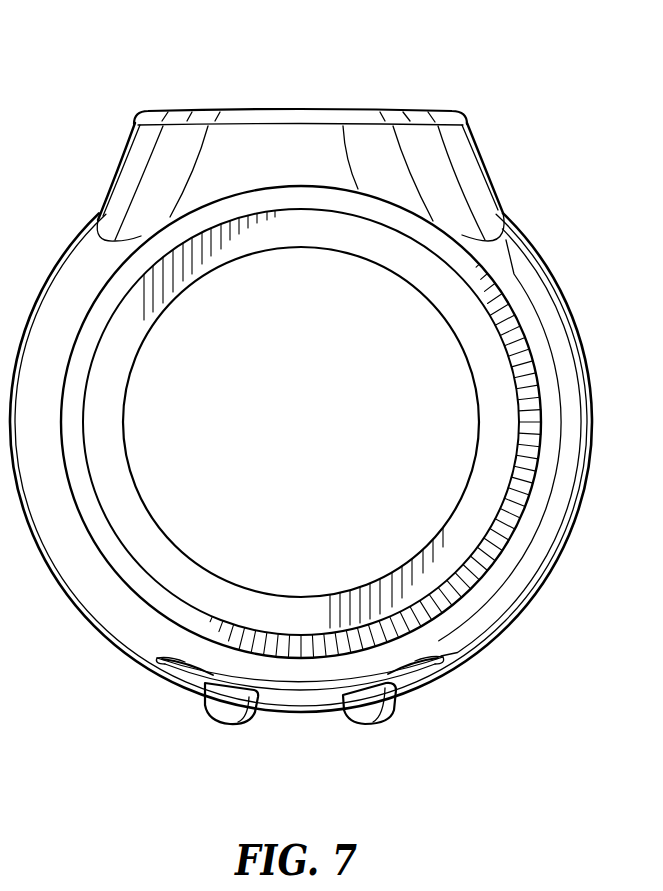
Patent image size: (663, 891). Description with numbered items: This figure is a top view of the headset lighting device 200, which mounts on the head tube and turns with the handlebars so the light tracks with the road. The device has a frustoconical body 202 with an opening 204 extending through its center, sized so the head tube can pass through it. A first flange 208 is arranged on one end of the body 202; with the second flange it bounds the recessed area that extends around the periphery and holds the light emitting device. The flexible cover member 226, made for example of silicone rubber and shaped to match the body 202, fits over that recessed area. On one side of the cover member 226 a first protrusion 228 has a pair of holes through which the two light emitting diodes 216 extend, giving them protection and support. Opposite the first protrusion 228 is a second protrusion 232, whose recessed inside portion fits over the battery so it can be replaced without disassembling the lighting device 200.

The lighting device 200 is at (457, 56).
The body 202 is at (420, 269).
The opening 204 is at (318, 436).
The first flange 208 is at (128, 498).
The light emitting diodes 216 is at (345, 718).
The cover member 226 is at (532, 267).
The first protrusion 228 is at (413, 677).
The second protrusion 232 is at (478, 158).